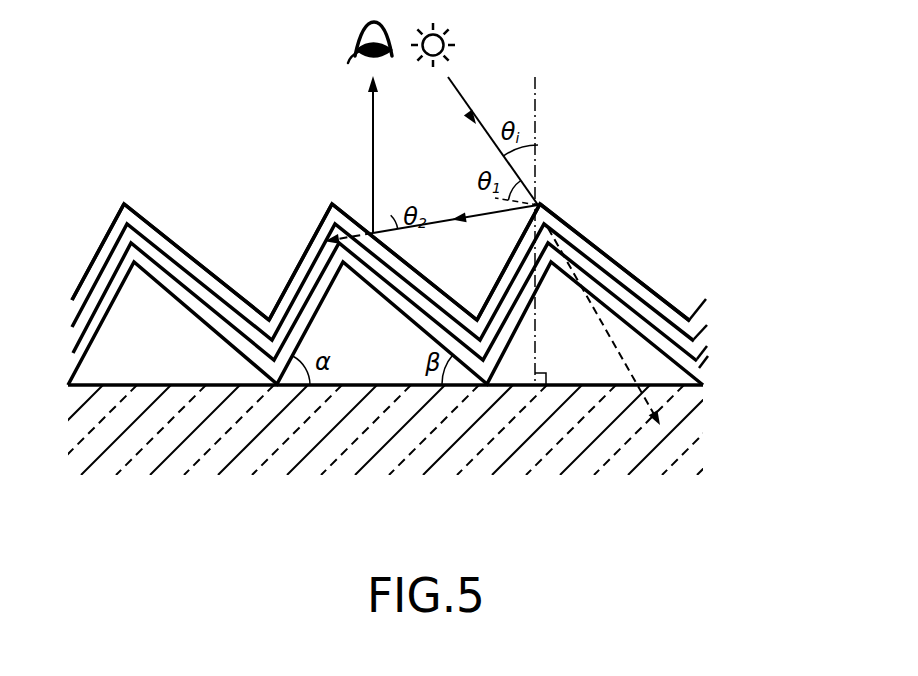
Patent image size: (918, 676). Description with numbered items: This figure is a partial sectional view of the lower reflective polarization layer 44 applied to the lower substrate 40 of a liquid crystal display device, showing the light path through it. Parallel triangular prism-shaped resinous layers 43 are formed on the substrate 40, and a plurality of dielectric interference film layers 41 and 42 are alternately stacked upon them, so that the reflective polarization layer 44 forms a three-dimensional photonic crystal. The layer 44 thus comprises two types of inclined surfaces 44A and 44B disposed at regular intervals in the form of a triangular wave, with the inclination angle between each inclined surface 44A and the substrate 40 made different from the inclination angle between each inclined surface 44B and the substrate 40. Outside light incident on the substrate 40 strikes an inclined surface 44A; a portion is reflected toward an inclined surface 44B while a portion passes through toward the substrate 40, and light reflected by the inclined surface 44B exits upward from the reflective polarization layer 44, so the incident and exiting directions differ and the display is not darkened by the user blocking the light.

The substrate 40 is at (697, 433).
The layer 41 is at (697, 322).
The layer 42 is at (697, 343).
The triangular prism-shaped resinous layer 43 is at (163, 360).
The reflective polarization layer 44 is at (464, 295).
The inclined surface 44A is at (98, 247).
The inclined surface 44B is at (171, 240).